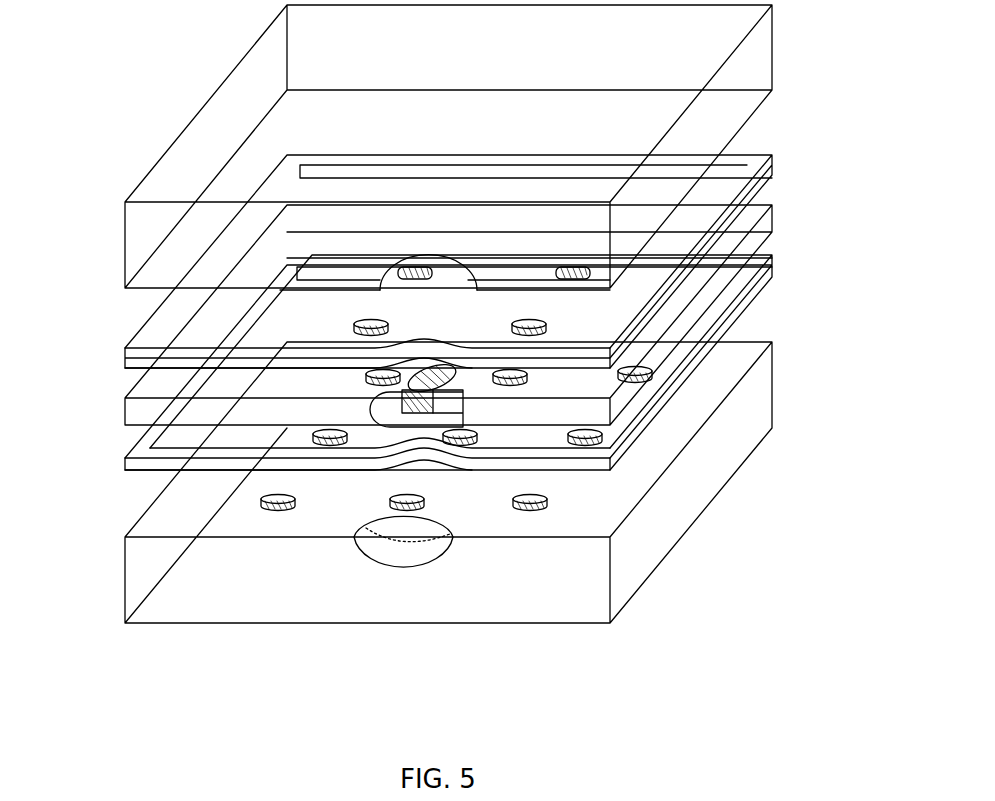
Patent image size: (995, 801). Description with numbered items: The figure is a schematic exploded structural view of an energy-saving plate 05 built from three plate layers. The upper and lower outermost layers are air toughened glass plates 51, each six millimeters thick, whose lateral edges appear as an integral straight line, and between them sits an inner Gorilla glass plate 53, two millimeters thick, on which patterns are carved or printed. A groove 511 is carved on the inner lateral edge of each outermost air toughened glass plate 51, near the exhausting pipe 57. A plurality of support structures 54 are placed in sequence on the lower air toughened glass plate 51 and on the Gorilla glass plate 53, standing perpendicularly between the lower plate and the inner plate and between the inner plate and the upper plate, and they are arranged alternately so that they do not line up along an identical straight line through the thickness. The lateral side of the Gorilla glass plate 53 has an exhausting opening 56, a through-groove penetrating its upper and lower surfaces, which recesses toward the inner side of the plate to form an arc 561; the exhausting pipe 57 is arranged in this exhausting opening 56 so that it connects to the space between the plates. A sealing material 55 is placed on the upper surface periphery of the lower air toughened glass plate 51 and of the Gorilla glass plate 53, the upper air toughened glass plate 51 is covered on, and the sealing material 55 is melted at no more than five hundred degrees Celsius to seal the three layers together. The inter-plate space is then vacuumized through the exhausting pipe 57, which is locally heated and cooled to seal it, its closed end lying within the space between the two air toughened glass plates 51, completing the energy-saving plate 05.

The air toughened glass plate 51 is at (152, 230).
The groove 511 is at (440, 254).
The Gorilla glass plate 53 is at (143, 413).
The support structure 54 is at (533, 313).
The sealing material 55 is at (140, 351).
The exhausting opening 56 is at (402, 393).
The exhausting pipe 57 is at (433, 410).
The arc 561 is at (440, 408).
The energy-saving plate 05 is at (832, 638).